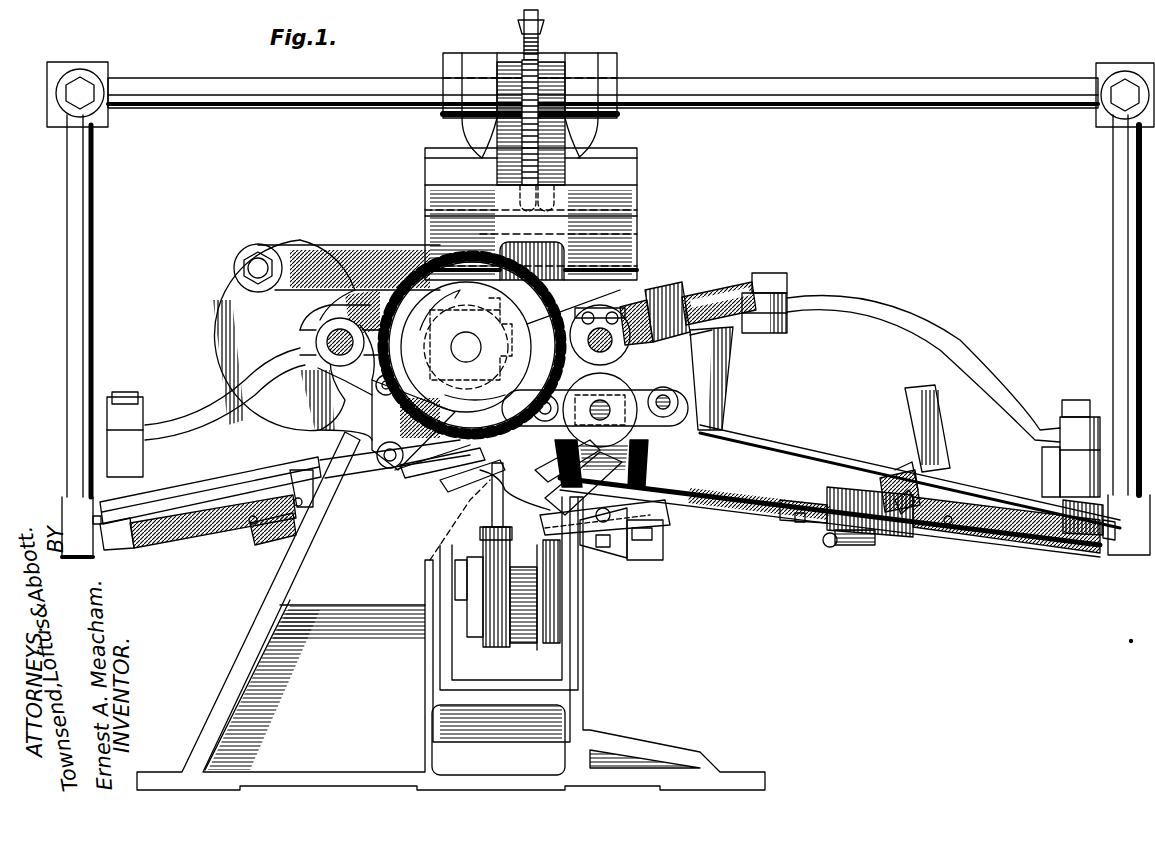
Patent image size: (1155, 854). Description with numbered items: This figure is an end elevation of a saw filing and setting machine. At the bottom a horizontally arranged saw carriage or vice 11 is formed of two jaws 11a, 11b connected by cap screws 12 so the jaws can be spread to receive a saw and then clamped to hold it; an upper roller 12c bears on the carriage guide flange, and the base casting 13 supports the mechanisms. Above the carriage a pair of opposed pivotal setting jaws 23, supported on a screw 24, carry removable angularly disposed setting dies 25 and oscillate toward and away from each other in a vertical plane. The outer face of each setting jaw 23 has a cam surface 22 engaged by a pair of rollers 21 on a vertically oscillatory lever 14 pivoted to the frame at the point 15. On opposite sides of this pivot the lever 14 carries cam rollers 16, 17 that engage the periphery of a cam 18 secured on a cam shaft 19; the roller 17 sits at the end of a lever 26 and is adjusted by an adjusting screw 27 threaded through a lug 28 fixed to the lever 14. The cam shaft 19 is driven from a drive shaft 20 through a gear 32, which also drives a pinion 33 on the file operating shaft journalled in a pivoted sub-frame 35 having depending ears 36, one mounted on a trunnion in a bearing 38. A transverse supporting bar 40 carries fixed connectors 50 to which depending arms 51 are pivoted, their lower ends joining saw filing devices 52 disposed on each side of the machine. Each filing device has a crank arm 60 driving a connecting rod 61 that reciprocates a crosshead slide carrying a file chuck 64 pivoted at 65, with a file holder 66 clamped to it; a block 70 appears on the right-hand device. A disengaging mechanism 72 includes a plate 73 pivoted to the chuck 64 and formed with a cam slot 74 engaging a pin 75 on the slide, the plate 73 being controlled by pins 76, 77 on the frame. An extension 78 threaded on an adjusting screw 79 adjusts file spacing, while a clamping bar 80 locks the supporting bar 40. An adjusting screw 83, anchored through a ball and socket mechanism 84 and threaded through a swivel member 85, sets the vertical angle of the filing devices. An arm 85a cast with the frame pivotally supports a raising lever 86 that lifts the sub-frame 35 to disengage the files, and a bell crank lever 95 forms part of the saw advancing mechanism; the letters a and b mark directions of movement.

The saw carriage or vice 11 is at (665, 555).
The jaw 11a is at (600, 525).
The jaw 11b is at (610, 548).
The cap screws 12 is at (665, 540).
The upper roller 12c is at (530, 585).
The frame base 13 is at (451, 611).
The lever 14 is at (440, 457).
The pivotal point 15 is at (400, 457).
The cam roller 16 is at (372, 381).
The cam roller 17 is at (413, 425).
The cam 18 is at (572, 288).
The cam shaft 19 is at (462, 354).
The drive shaft 20 is at (280, 345).
The rollers 21 is at (760, 412).
The cam surface 22 is at (620, 470).
The setting jaws 23 is at (700, 485).
The screw 24 is at (745, 358).
The setting dies 25 is at (630, 512).
The lever 26 is at (440, 438).
The adjusting screw 27 is at (455, 490).
The lug 28 is at (490, 474).
The gear 32 is at (405, 270).
The pinion 33 is at (611, 323).
The sub-frame 35 is at (580, 222).
The depending ears 36 is at (446, 250).
The bearing 38 is at (625, 172).
The transverse supporting bar 40 is at (762, 86).
The fixed connectors 50 is at (103, 68).
The depending arms 51 is at (82, 207).
The saw filing devices 52 is at (880, 297).
The crank arm 60 is at (767, 277).
The connecting rod 61 is at (200, 390).
The file chuck 64 is at (962, 550).
The pivotal connection 65 is at (250, 520).
The file holder 66 is at (805, 530).
The block 70 is at (923, 405).
The disengaging mechanism 72 is at (895, 525).
The plate 73 is at (257, 534).
The cam slot 74 is at (898, 485).
The pin 75 is at (300, 505).
The pin 76 is at (775, 445).
The pin 77 is at (260, 472).
The extension 78 is at (720, 309).
The adjusting screw 79 is at (635, 303).
The clamping bar 80 is at (565, 138).
The adjusting screw 83 is at (544, 42).
The ball and socket mechanism 84 is at (540, 203).
The swivel member 85 is at (555, 77).
The arm 85a is at (222, 307).
The raising lever 86 is at (310, 248).
The bell crank lever 95 is at (460, 600).
The direction a is at (528, 438).
The direction b is at (468, 453).